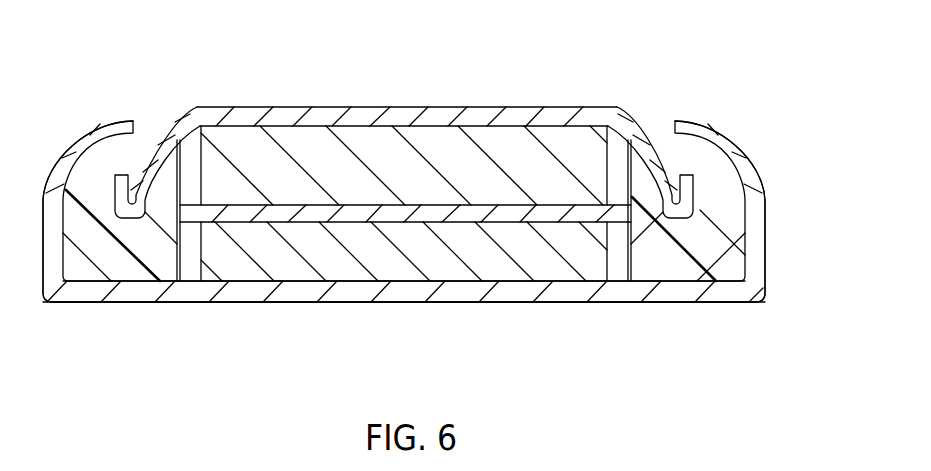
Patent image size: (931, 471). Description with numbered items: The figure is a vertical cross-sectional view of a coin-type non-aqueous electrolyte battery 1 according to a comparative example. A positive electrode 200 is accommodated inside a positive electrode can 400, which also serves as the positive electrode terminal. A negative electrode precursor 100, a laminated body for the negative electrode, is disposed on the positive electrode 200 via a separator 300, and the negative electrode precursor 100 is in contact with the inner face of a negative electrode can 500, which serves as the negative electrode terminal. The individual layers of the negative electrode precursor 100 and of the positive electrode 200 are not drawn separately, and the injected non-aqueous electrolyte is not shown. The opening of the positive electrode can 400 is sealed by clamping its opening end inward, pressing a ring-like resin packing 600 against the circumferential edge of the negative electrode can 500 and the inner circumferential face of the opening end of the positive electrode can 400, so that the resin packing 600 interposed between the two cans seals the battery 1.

The non-aqueous electrolyte battery 1 is at (443, 80).
The negative electrode precursor 100 is at (380, 157).
The positive electrode 200 is at (397, 263).
The separator 300 is at (282, 213).
The positive electrode can 400 is at (523, 290).
The negative electrode can 500 is at (532, 112).
The resin packing 600 is at (722, 213).